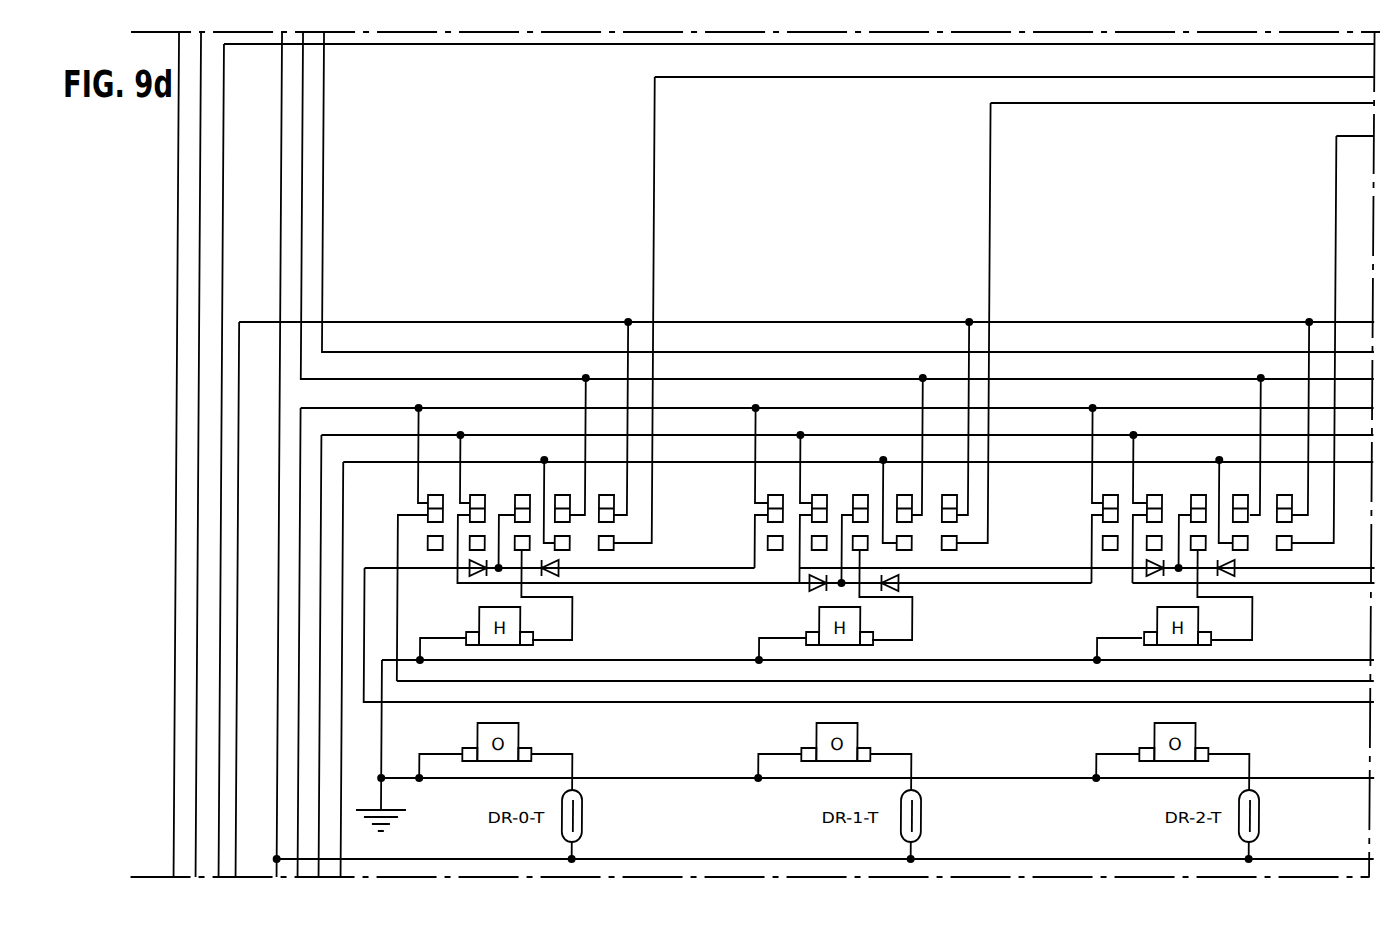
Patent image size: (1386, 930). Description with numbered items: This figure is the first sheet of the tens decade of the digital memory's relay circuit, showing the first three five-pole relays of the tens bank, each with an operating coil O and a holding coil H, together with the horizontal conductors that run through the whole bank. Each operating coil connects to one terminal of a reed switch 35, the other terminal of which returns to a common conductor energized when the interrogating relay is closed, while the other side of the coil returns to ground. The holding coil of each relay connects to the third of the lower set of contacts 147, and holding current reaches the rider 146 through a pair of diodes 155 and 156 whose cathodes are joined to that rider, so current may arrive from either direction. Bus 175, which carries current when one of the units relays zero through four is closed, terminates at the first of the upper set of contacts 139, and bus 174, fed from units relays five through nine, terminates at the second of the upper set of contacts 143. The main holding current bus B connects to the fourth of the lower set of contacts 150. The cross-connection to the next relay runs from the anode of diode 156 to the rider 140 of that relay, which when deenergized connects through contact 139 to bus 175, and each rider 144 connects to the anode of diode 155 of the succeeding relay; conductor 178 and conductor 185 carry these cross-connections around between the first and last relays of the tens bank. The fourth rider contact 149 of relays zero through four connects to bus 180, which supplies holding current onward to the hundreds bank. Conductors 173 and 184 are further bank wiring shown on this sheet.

The reed switch 35 is at (586, 816).
The first of the upper set of contacts 139 is at (433, 498).
The rider 140 is at (433, 520).
The second of the upper set of contacts 143 is at (478, 497).
The rider 144 is at (485, 513).
The rider 146 is at (516, 507).
The third of the lower set of contacts 147 is at (517, 560).
The fourth rider contact 149 is at (555, 507).
The fourth of the lower set of contacts 150 is at (562, 548).
The diode 155 is at (467, 572).
The diode 156 is at (557, 567).
The conductor line 173 is at (322, 188).
The bus 174 is at (355, 438).
The bus 175 is at (336, 412).
The conductor 178 is at (690, 700).
The bus 180 is at (301, 232).
The conductor line 184 is at (646, 571).
The conductor 185 is at (686, 680).
The main holding circuit current bus B is at (340, 770).